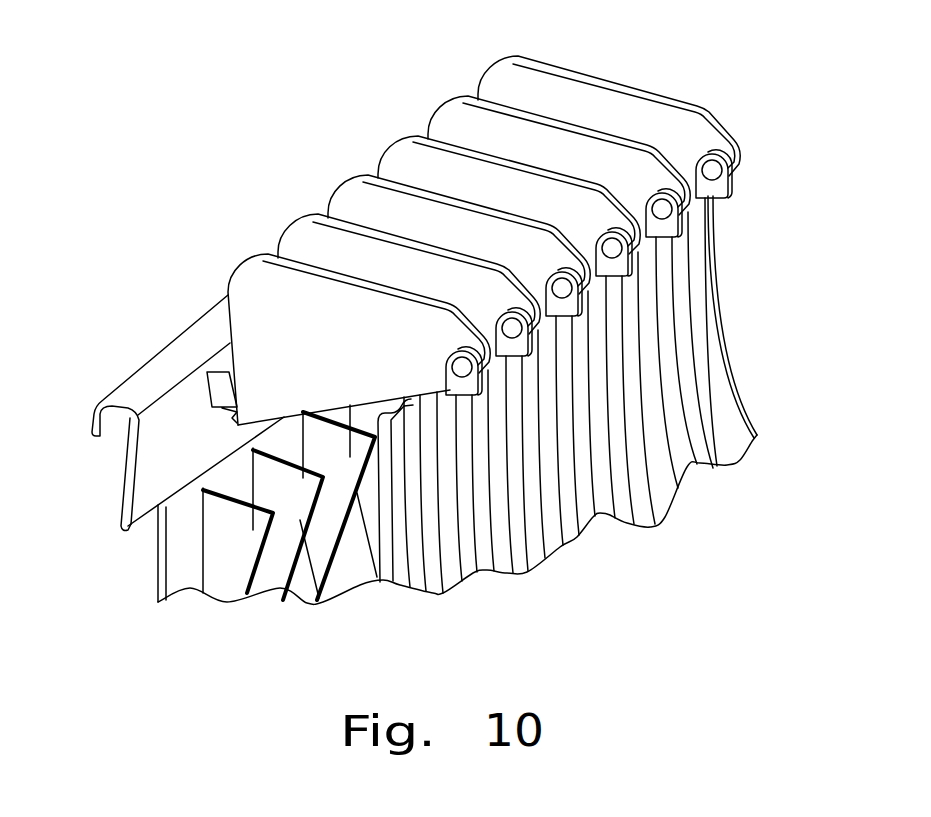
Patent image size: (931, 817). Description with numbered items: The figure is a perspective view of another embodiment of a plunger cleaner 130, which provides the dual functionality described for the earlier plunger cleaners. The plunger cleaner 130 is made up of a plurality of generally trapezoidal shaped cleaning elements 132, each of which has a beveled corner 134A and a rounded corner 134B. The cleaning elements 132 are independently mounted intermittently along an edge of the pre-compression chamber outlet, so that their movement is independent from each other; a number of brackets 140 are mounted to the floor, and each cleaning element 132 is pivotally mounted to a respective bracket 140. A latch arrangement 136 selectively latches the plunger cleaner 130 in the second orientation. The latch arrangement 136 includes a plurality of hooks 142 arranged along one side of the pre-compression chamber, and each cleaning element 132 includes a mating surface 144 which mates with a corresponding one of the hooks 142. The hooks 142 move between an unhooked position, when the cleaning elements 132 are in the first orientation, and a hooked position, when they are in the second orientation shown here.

The plunger cleaner 130 is at (418, 102).
The cleaning elements 132 is at (602, 187).
The beveled corner 134A is at (723, 118).
The rounded corner 134B is at (490, 62).
The latch arrangement 136 is at (192, 344).
The brackets 140 is at (723, 195).
The hooks 142 is at (235, 542).
The mating surface 144 is at (236, 410).